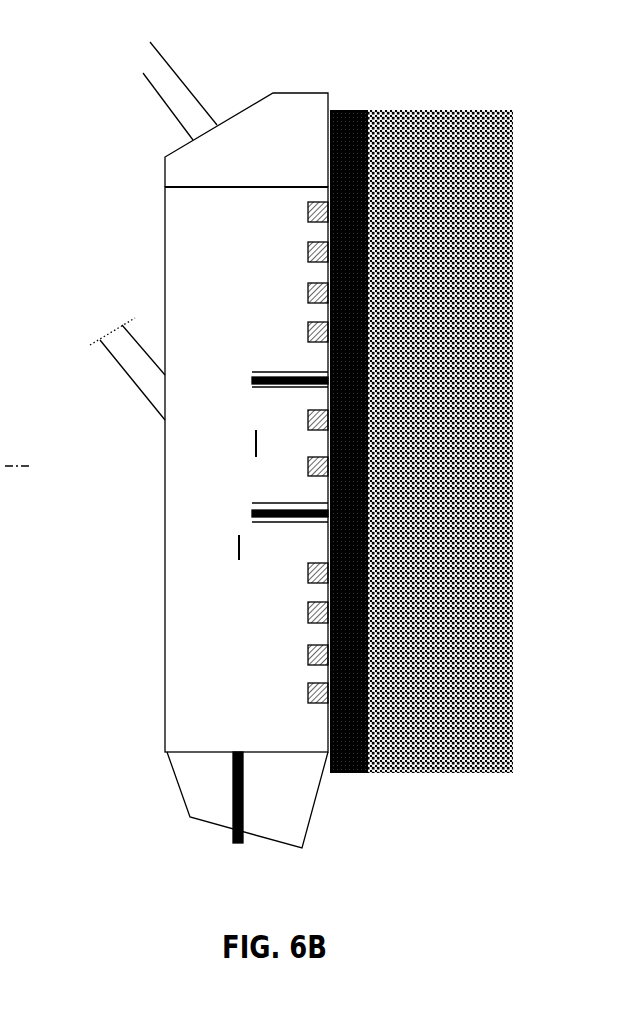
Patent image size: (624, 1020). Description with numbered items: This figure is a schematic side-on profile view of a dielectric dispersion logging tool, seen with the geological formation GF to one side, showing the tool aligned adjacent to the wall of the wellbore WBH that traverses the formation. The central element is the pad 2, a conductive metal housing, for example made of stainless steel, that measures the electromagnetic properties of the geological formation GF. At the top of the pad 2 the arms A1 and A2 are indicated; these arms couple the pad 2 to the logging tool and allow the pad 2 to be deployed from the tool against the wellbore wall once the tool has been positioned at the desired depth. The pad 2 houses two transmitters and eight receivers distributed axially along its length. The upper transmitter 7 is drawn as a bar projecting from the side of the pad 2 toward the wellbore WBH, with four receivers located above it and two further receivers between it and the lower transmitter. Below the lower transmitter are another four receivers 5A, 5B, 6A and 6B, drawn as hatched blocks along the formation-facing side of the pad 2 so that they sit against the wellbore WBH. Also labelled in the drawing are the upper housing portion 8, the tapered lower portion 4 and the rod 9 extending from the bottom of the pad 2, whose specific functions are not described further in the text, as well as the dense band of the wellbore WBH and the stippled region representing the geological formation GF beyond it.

The pad 2 is at (165, 477).
The lower cone section 4 is at (208, 732).
The receiver 5A is at (303, 565).
The receiver 5B is at (303, 610).
The receiver 6A is at (303, 645).
The receiver 6B is at (303, 693).
The upper transmitter 7 is at (250, 373).
The upper housing section 8 is at (177, 313).
The probe rod 9 is at (223, 845).
The arm A1 is at (158, 85).
The arm A2 is at (133, 373).
The wellbore WBH is at (347, 108).
The geological formation GF is at (482, 180).